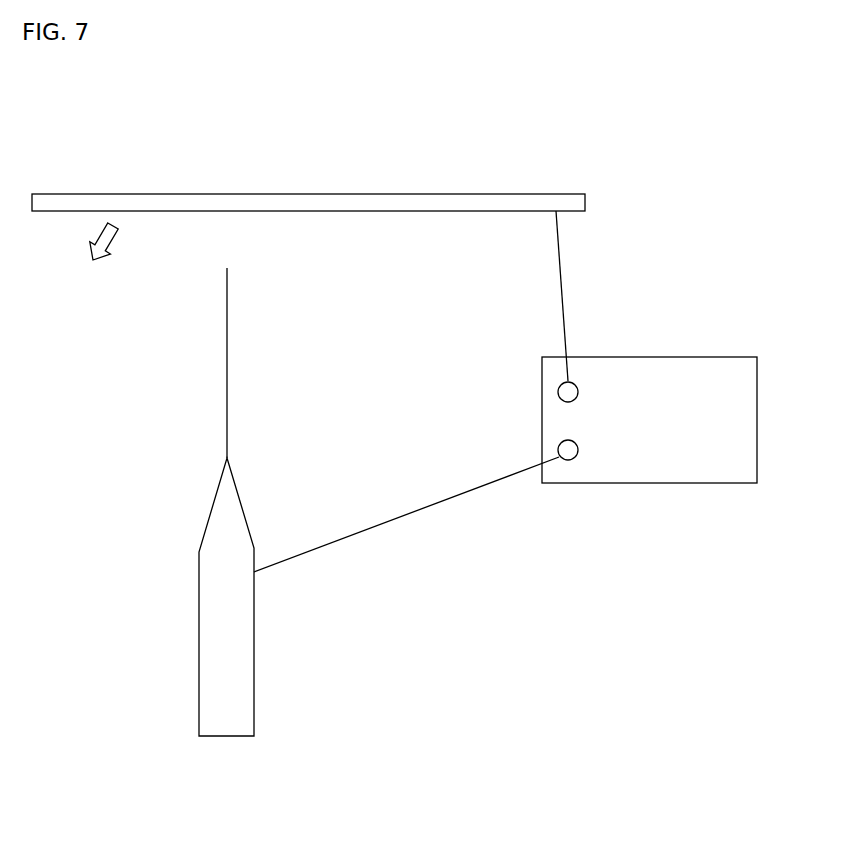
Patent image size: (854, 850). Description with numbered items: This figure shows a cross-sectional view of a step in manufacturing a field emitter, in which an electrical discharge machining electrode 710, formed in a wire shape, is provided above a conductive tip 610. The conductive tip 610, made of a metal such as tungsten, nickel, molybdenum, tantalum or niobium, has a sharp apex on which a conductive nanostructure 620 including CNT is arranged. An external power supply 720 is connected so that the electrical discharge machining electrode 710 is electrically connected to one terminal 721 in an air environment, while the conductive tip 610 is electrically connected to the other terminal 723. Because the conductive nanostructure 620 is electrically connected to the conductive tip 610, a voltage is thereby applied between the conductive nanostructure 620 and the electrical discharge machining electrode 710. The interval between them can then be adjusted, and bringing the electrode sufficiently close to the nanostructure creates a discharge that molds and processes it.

The electrical discharge machining electrode 710 is at (285, 194).
The conductive nanostructure 620 is at (228, 360).
The conductive tip 610 is at (242, 636).
The external power supply 720 is at (689, 380).
The terminal 721 is at (575, 380).
The terminal 723 is at (575, 461).